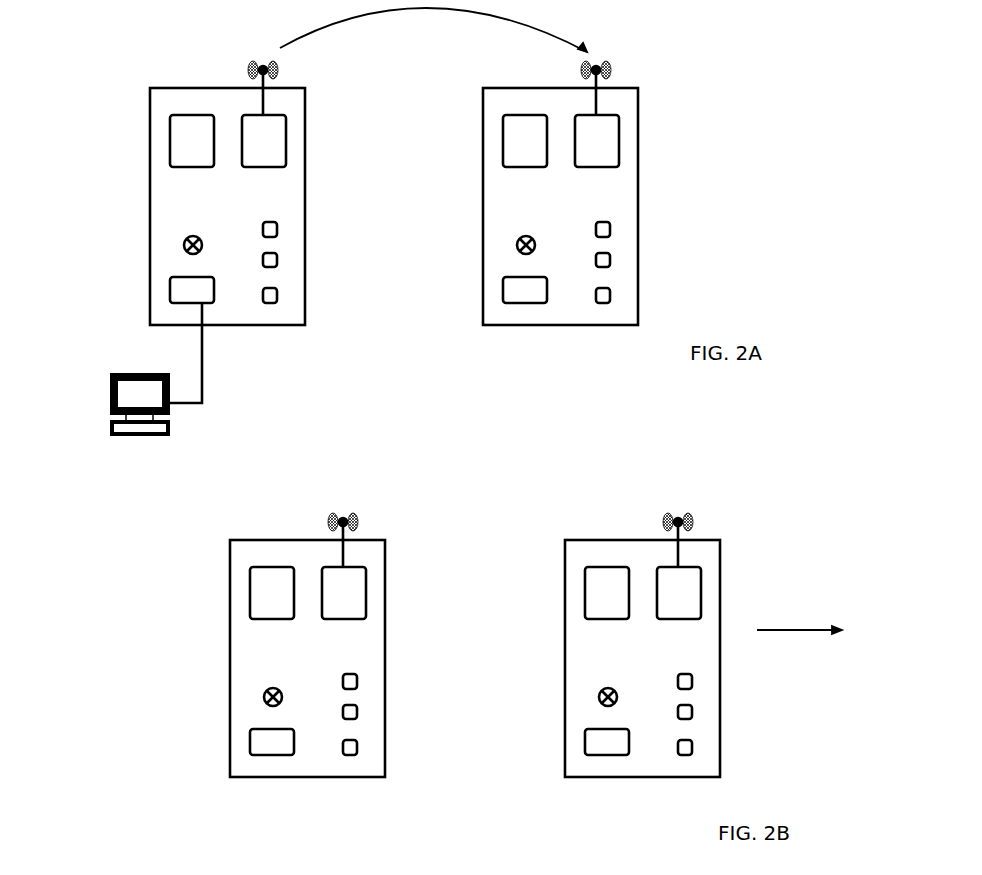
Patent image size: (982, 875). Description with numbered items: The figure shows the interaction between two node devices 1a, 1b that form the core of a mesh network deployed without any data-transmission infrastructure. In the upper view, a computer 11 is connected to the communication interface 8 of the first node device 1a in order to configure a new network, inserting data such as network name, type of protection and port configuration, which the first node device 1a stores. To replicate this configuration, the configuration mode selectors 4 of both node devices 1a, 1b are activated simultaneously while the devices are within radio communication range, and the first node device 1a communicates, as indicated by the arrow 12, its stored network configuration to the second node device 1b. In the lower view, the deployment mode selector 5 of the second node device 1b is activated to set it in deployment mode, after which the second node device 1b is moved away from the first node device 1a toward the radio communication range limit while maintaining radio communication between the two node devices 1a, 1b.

In FIG. 2A, the first node device 1a is at (189, 193).
In FIG. 2B, the first node device 1a is at (307, 553).
In FIG. 2A, the second node device 1b is at (600, 193).
In FIG. 2B, the second node device 1b is at (676, 616).
In FIG. 2A, the configuration mode selector 4 is at (610, 225).
In FIG. 2B, the deployment mode selector 5 is at (692, 710).
In FIG. 2A, the communication interface 8 is at (193, 290).
In FIG. 2A, the computer 11 is at (110, 434).
In FIG. 2A, the arrow 12 is at (433, 30).